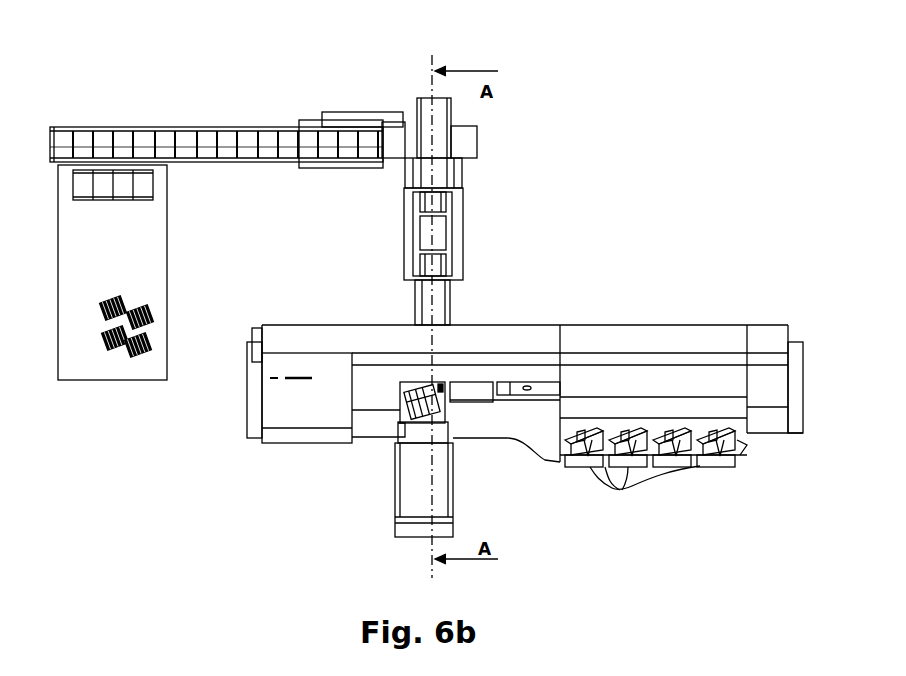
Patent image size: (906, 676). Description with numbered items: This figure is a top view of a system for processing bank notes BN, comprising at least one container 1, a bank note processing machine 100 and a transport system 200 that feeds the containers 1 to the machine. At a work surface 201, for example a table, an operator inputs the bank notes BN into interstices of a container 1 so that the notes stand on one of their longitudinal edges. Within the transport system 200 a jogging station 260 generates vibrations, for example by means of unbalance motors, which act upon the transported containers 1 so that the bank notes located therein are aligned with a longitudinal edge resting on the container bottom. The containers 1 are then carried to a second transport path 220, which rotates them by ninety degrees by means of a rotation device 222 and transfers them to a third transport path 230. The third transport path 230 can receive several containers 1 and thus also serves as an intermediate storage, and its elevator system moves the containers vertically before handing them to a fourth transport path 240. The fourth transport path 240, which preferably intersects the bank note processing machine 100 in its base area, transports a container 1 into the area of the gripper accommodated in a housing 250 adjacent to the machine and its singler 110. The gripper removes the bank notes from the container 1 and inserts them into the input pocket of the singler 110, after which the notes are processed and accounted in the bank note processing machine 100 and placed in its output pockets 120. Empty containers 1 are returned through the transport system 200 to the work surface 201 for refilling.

The container 1 is at (237, 115).
The bank note processing machine 100 is at (715, 311).
The singler 110 is at (400, 410).
The output pockets 120 is at (656, 475).
The transport system 200 is at (522, 111).
The work surface 201 is at (163, 280).
The second transport path 220 is at (463, 170).
The rotation device 222 is at (280, 162).
The third transport path 230 is at (463, 230).
The fourth transport path 240 is at (445, 295).
The housing 250 is at (443, 480).
The jogging station 260 is at (342, 158).
The bank notes BN is at (112, 298).